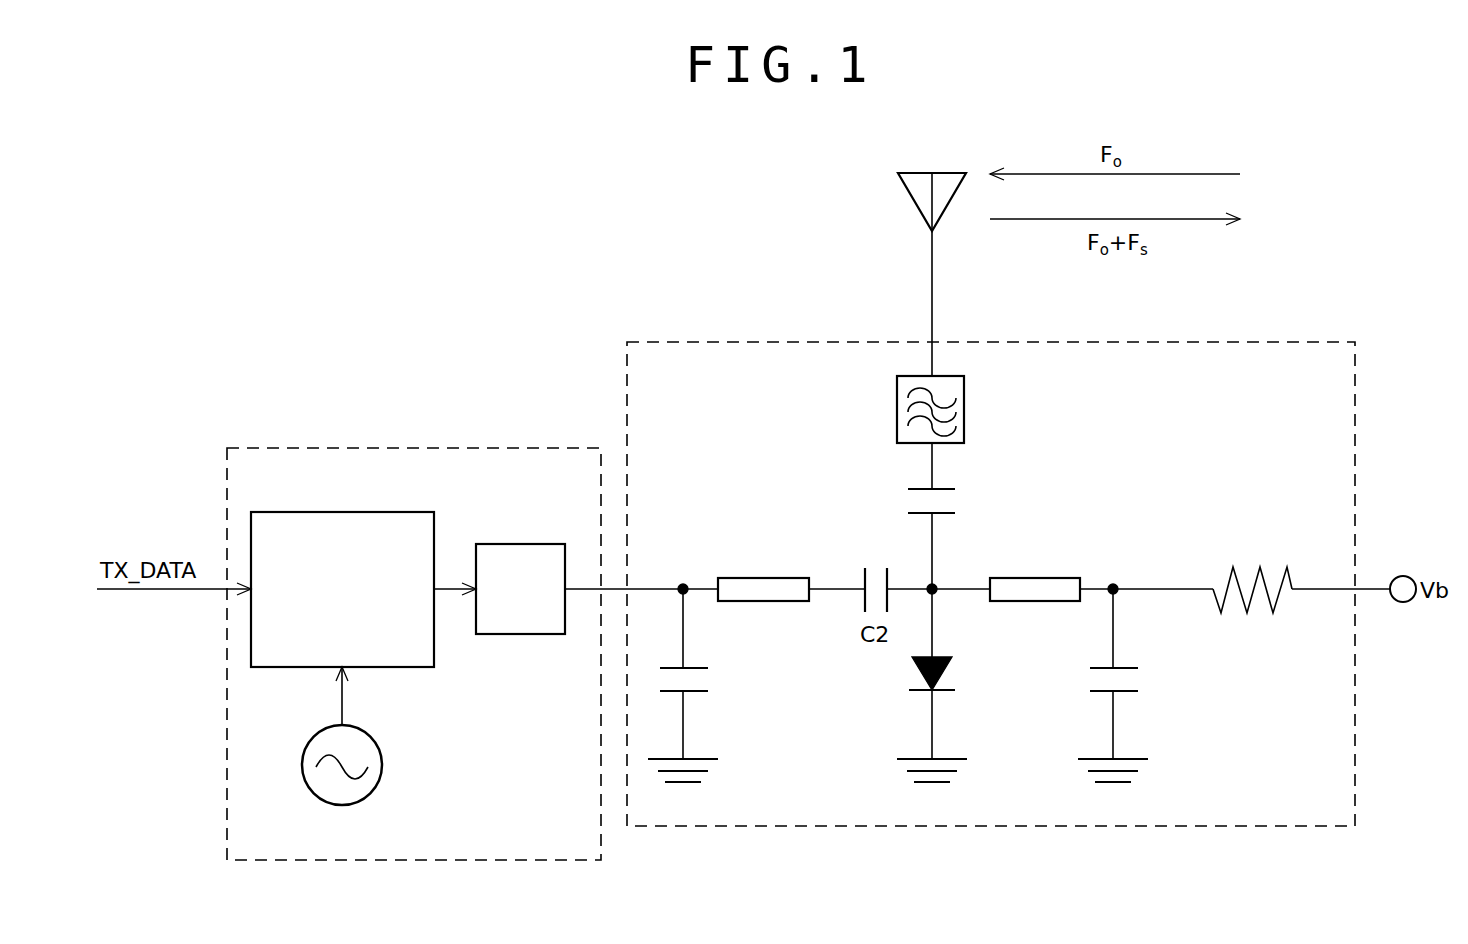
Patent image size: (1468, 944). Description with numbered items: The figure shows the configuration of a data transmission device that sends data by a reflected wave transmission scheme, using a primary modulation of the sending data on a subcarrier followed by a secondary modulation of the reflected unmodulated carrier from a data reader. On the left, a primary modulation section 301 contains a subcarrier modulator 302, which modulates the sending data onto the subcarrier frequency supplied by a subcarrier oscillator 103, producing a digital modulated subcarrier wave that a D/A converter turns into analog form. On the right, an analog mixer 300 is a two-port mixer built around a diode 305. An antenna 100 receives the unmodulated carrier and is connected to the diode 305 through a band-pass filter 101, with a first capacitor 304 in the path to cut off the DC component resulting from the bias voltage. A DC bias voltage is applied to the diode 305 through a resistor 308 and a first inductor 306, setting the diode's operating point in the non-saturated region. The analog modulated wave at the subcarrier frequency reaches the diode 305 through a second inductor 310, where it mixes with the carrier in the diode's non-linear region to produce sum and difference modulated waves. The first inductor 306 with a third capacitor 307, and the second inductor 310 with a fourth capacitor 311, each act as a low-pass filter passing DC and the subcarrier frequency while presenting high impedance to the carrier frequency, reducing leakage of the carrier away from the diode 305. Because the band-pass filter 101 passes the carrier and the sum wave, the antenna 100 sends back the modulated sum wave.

The antenna 100 is at (912, 203).
The band-pass filter 101 is at (898, 410).
The subcarrier oscillator 103 is at (382, 765).
The analog mixer 300 is at (990, 341).
The primary modulation section 301 is at (430, 448).
The subcarrier modulator 302 is at (341, 512).
The capacitor C1 304 is at (955, 500).
The diode 305 is at (948, 671).
The inductor L1 306 is at (1067, 578).
The capacitor C3 307 is at (1138, 668).
The resistor R1 308 is at (1287, 567).
The inductor L2 310 is at (787, 578).
The capacitor C4 311 is at (708, 668).